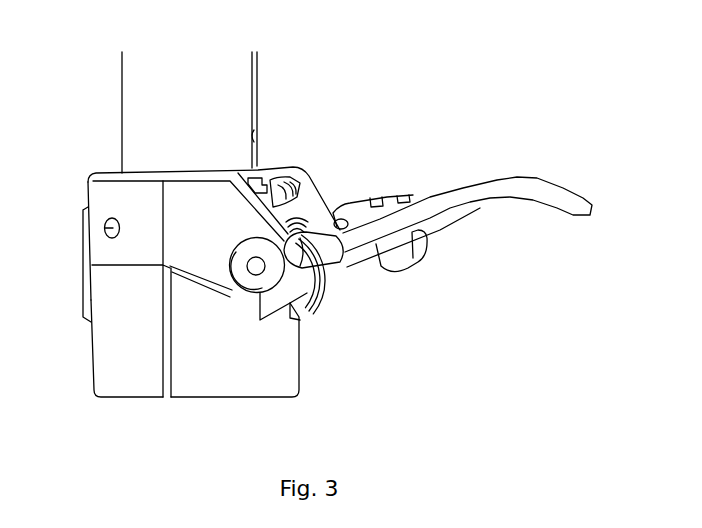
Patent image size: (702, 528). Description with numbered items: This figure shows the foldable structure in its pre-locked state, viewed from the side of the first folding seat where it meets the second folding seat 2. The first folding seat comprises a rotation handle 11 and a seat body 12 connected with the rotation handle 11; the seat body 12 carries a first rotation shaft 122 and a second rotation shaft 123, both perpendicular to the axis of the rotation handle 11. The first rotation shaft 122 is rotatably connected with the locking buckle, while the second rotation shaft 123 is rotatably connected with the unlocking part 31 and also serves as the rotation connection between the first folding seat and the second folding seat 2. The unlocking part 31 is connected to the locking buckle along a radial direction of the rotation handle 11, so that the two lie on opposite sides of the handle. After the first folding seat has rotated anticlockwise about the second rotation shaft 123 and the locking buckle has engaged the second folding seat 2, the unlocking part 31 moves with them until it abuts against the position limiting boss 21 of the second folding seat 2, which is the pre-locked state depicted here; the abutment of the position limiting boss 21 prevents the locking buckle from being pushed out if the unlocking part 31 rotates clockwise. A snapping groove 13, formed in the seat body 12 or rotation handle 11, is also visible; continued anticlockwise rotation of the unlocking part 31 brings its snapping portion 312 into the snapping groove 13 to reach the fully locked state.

The rotation handle 11 is at (128, 83).
The seat body 12 is at (120, 198).
The first rotation shaft 122 is at (110, 227).
The second rotation shaft 123 is at (253, 268).
The snapping groove 13 is at (274, 168).
The second folding seat 2 is at (120, 328).
The position limiting boss 21 is at (320, 254).
The unlocking part 31 is at (462, 182).
The snapping portion 312 is at (356, 213).